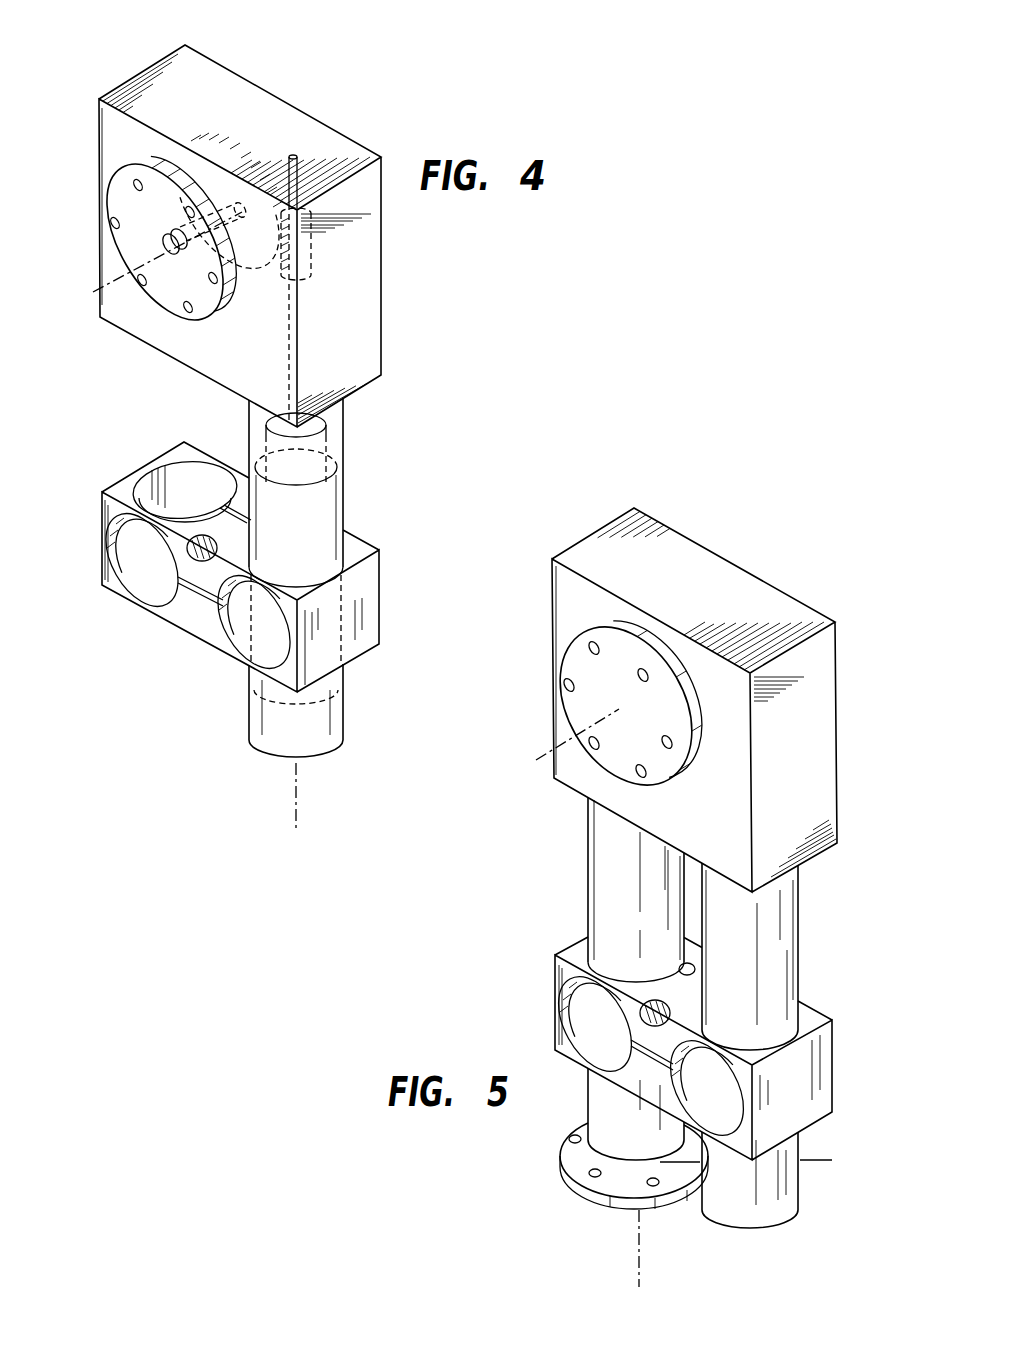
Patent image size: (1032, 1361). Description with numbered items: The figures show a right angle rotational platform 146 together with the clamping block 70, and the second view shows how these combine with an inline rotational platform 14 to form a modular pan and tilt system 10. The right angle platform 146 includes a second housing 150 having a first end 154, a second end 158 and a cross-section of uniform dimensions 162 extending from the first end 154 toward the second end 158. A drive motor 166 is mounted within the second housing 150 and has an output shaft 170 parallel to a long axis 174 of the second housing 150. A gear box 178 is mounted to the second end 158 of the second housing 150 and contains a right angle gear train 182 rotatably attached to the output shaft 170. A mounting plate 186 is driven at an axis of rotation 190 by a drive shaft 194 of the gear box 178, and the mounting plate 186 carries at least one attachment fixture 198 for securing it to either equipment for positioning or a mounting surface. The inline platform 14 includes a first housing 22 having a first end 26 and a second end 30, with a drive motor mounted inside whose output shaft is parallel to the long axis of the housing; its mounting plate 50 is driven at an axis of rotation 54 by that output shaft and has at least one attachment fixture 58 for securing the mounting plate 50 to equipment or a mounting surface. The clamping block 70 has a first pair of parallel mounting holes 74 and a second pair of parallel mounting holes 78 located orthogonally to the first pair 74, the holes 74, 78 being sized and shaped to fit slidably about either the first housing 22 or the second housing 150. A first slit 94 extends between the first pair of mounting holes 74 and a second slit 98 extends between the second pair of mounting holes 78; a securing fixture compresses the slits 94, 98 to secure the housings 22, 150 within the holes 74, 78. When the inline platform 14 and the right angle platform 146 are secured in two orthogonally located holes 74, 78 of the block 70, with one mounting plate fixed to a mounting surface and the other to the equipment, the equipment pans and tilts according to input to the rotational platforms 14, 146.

In FIG. 5, the modular pan and tilt system 10 is at (870, 806).
In FIG. 5, the inline rotational platform 14 is at (582, 917).
In FIG. 5, the first housing 22 is at (619, 847).
In FIG. 5, the first end 26 is at (588, 806).
In FIG. 5, the second end 30 is at (560, 1160).
In FIG. 5, the mounting plate 50 is at (621, 1183).
In FIG. 5, the axis of rotation 54 is at (642, 1248).
In FIG. 5, the attachment fixture 58 is at (596, 1178).
In FIG. 4, the clamping block 70 is at (366, 612).
In FIG. 5, the clamping block 70 is at (820, 1079).
In FIG. 4, the first pair of parallel mounting holes 74 is at (160, 475).
In FIG. 5, the first pair of parallel mounting holes 74 is at (802, 1038).
In FIG. 4, the second pair of parallel mounting holes 78 is at (150, 592).
In FIG. 5, the second pair of parallel mounting holes 78 is at (578, 1025).
In FIG. 4, the first slit 94 is at (243, 470).
In FIG. 5, the first slit 94 is at (686, 965).
In FIG. 4, the second slit 98 is at (190, 607).
In FIG. 5, the second slit 98 is at (651, 1063).
In FIG. 4, the right angle rotational platform 146 is at (389, 287).
In FIG. 5, the right angle rotational platform 146 is at (776, 576).
In FIG. 4, the second housing 150 is at (338, 436).
In FIG. 5, the second housing 150 is at (789, 895).
In FIG. 4, the first end 154 is at (330, 756).
In FIG. 5, the first end 154 is at (771, 1213).
In FIG. 4, the second end 158 is at (328, 424).
In FIG. 5, the second end 158 is at (784, 931).
In FIG. 5, the cross-section of uniform dimensions 162 is at (832, 1160).
In FIG. 4, the drive motor 166 is at (318, 512).
In FIG. 4, the output shaft 170 is at (299, 365).
In FIG. 4, the long axis 174 is at (300, 822).
In FIG. 4, the gear box 178 is at (340, 150).
In FIG. 4, the right angle gear train 182 is at (274, 150).
In FIG. 4, the mounting plate 186 is at (123, 246).
In FIG. 5, the mounting plate 186 is at (592, 684).
In FIG. 4, the axis of rotation 190 is at (158, 288).
In FIG. 5, the axis of rotation 190 is at (567, 736).
In FIG. 4, the drive shaft 194 is at (233, 217).
In FIG. 4, the attachment fixture 198 is at (112, 222).
In FIG. 5, the attachment fixture 198 is at (596, 645).